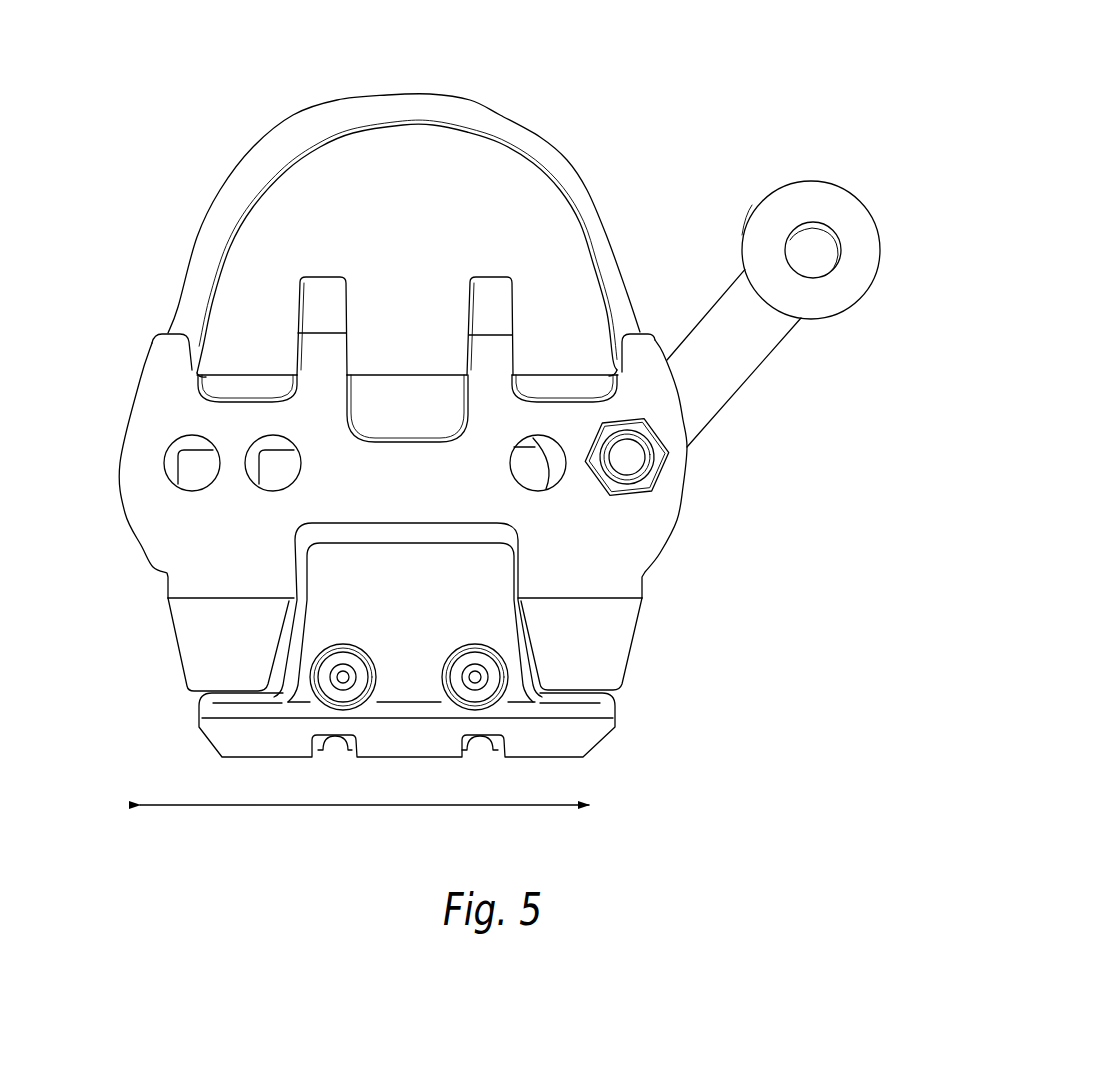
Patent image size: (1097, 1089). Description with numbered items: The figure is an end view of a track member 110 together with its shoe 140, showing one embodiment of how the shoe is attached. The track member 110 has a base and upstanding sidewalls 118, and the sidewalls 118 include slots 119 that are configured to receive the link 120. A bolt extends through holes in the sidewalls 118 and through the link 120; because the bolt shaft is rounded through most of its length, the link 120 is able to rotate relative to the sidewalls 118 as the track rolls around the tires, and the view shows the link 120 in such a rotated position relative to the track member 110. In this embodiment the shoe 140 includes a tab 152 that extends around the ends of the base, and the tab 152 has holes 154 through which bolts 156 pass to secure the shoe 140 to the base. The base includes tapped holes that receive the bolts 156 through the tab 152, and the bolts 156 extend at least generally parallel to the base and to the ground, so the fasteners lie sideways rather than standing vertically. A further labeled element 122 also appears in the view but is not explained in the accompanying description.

The track member 110 is at (688, 50).
The sidewalls 118 is at (543, 140).
The slots 119 is at (115, 475).
The link 120 is at (765, 362).
The pad holder 122 is at (315, 533).
The shoe 140 is at (532, 777).
The tab 152 is at (340, 585).
The holes 154 is at (503, 658).
The bolts 156 is at (343, 677).